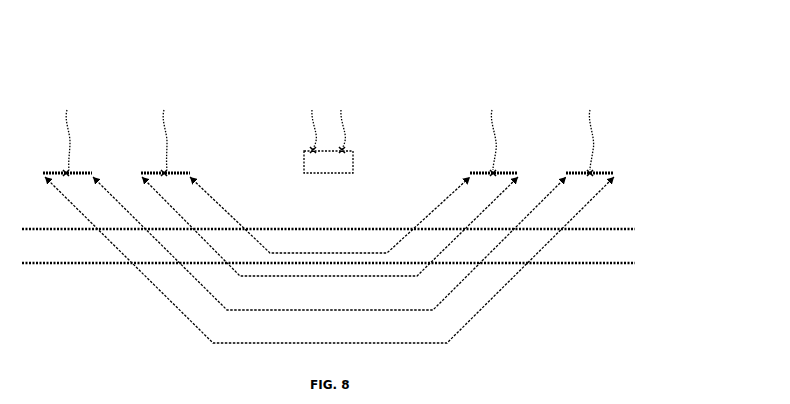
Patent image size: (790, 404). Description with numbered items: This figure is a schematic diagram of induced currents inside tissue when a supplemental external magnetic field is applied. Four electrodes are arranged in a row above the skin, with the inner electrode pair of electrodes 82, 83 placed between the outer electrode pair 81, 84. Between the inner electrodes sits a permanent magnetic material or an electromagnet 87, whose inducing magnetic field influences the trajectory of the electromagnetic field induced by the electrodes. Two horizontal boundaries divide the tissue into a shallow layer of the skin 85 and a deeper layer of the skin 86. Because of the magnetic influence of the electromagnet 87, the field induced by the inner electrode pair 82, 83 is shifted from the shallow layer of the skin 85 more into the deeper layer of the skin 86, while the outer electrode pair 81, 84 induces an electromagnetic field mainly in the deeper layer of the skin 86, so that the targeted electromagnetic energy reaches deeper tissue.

The outer electrode 81 is at (50, 172).
The inner electrode 82 is at (152, 172).
The inner electrode 83 is at (480, 172).
The outer electrode 84 is at (576, 172).
The shallow layer of the skin 85 is at (619, 248).
The deeper layer of the skin 86 is at (615, 313).
The electromagnet 87 is at (354, 158).